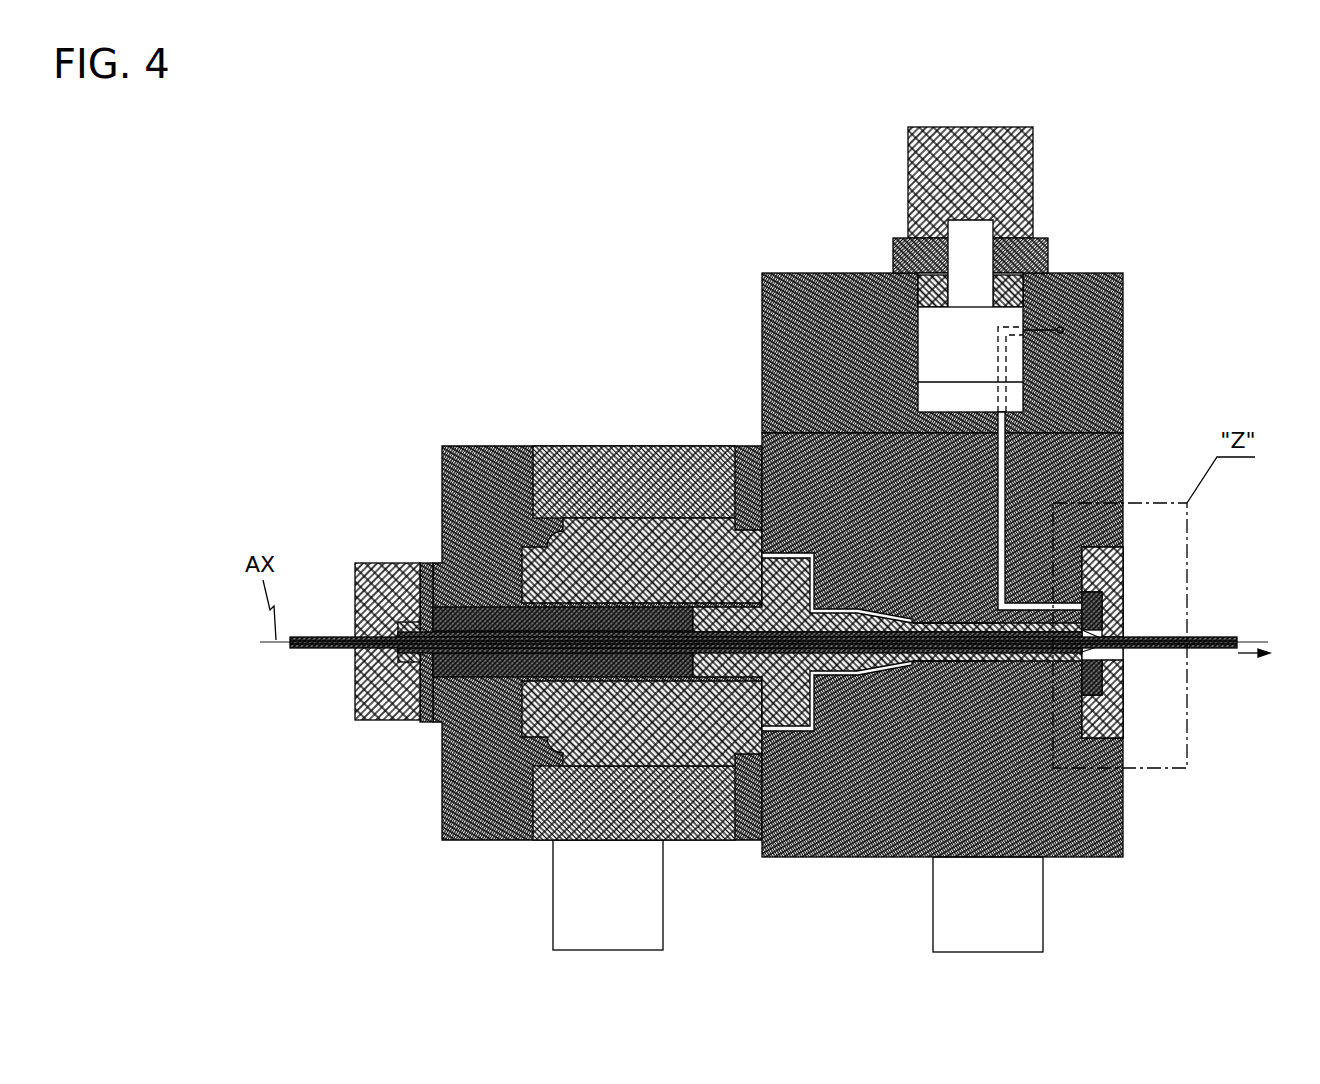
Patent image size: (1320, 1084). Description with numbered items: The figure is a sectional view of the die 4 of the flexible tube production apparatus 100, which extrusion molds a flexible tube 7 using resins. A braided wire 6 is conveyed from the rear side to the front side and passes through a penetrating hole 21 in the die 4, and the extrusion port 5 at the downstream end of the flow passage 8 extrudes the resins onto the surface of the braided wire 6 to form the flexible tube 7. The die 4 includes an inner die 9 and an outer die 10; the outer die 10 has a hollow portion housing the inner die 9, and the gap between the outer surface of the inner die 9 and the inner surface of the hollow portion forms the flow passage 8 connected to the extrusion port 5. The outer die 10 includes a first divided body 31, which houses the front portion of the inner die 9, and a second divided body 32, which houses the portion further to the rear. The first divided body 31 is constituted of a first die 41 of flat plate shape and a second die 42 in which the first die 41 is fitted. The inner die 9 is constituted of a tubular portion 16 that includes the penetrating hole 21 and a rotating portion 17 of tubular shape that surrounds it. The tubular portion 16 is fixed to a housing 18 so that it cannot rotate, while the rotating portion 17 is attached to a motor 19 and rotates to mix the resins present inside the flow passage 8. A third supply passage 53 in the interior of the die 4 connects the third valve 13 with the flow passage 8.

The flexible tube production apparatus 100 is at (402, 153).
The third valve 13 is at (978, 227).
The housing 18 is at (591, 661).
The motor 19 is at (597, 606).
The braided wire 6 is at (364, 636).
The die 4 is at (942, 614).
The inner die 9 is at (1115, 912).
The outer die 10 is at (1082, 907).
The penetrating hole 21 is at (887, 735).
The flow passage 8 is at (948, 765).
The third supply passage 53 is at (1091, 511).
The first divided body 31 is at (1185, 588).
The second die 42 is at (1162, 590).
The first die 41 is at (1162, 603).
The second divided body 32 is at (1161, 707).
The rotating portion 17 is at (1158, 680).
The tubular portion 16 is at (1158, 662).
The extrusion port 5 is at (763, 633).
The flexible tube 7 is at (764, 626).